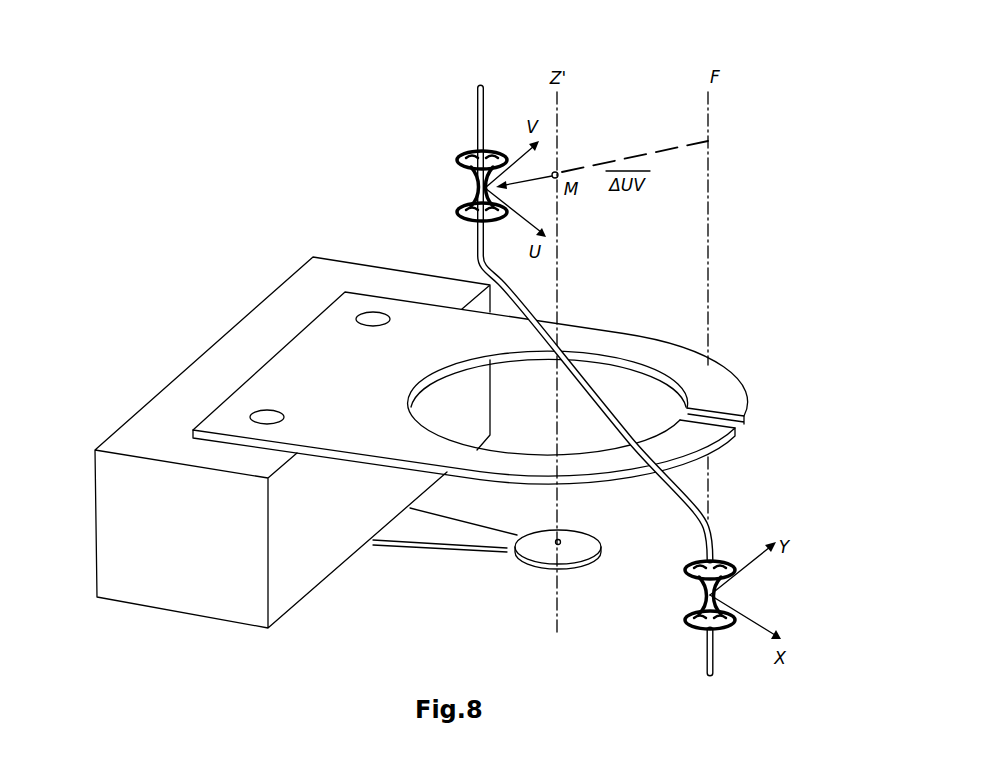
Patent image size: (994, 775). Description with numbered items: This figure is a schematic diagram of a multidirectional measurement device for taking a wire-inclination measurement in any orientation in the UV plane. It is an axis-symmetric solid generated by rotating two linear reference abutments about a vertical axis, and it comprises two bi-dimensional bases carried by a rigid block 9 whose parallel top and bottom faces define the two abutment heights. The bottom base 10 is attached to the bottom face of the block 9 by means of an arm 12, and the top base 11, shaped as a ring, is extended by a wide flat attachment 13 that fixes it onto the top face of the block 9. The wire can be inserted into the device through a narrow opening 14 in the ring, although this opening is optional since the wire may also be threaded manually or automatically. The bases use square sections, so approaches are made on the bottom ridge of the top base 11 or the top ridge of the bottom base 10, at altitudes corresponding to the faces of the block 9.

The block 9 is at (298, 535).
The bottom base 10 is at (575, 553).
The top base 11 is at (605, 342).
The arm 12 is at (432, 523).
The wide flat attachment 13 is at (335, 370).
The narrow opening 14 is at (737, 427).